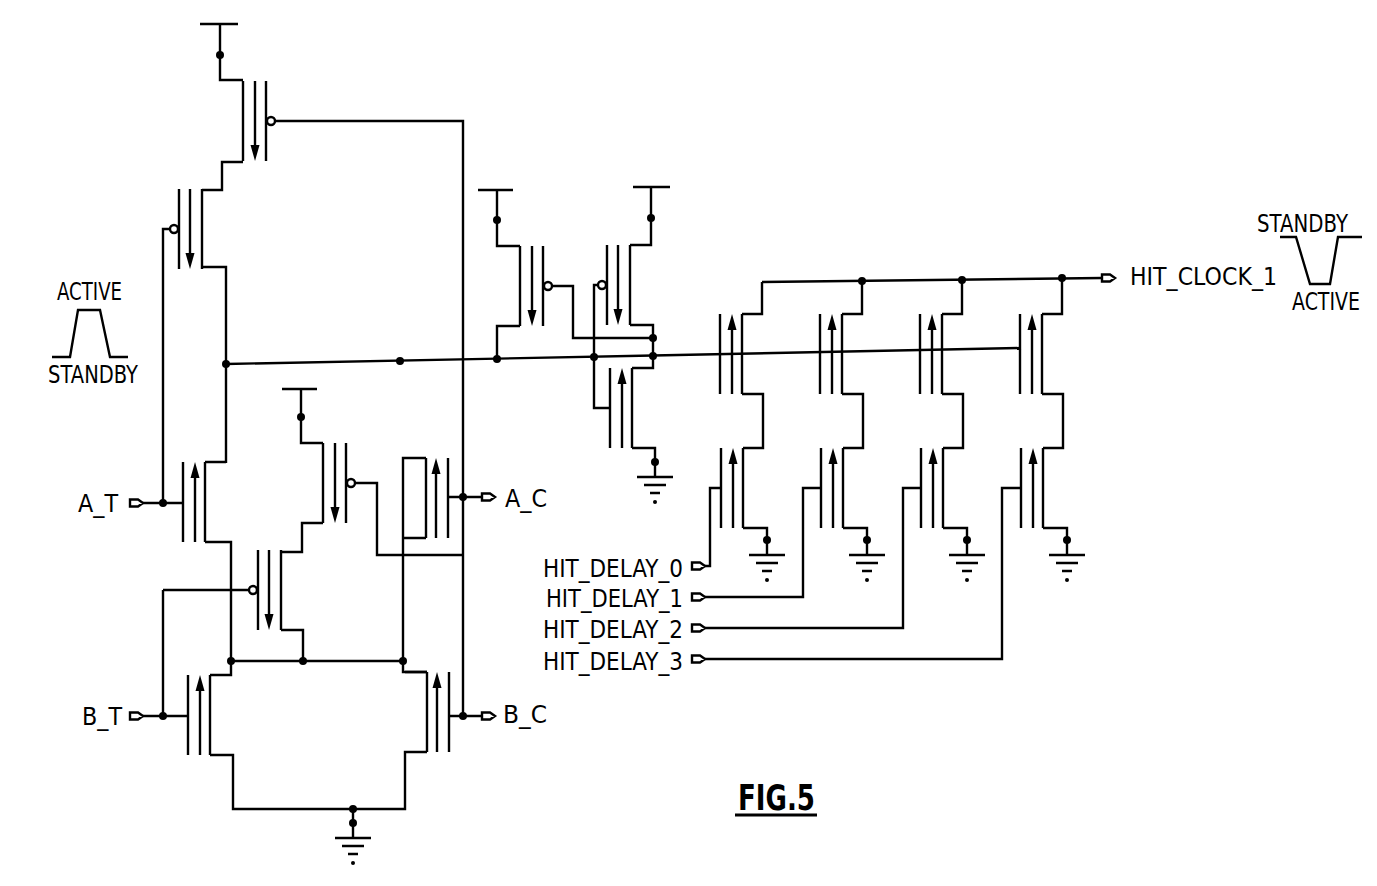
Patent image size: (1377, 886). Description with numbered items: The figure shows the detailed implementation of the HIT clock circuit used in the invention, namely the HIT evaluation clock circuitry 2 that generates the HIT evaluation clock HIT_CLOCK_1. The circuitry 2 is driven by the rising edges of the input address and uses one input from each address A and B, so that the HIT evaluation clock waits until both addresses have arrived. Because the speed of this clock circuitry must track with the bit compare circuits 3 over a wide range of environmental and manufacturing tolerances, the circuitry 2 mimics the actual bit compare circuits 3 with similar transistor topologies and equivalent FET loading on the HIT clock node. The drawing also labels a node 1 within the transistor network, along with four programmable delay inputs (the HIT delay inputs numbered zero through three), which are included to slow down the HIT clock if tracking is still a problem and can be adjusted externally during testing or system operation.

The inverter output node 1 is at (835, 339).
The HIT evaluation clock circuitry 2 is at (437, 351).
The bit compare circuits 3 is at (317, 645).